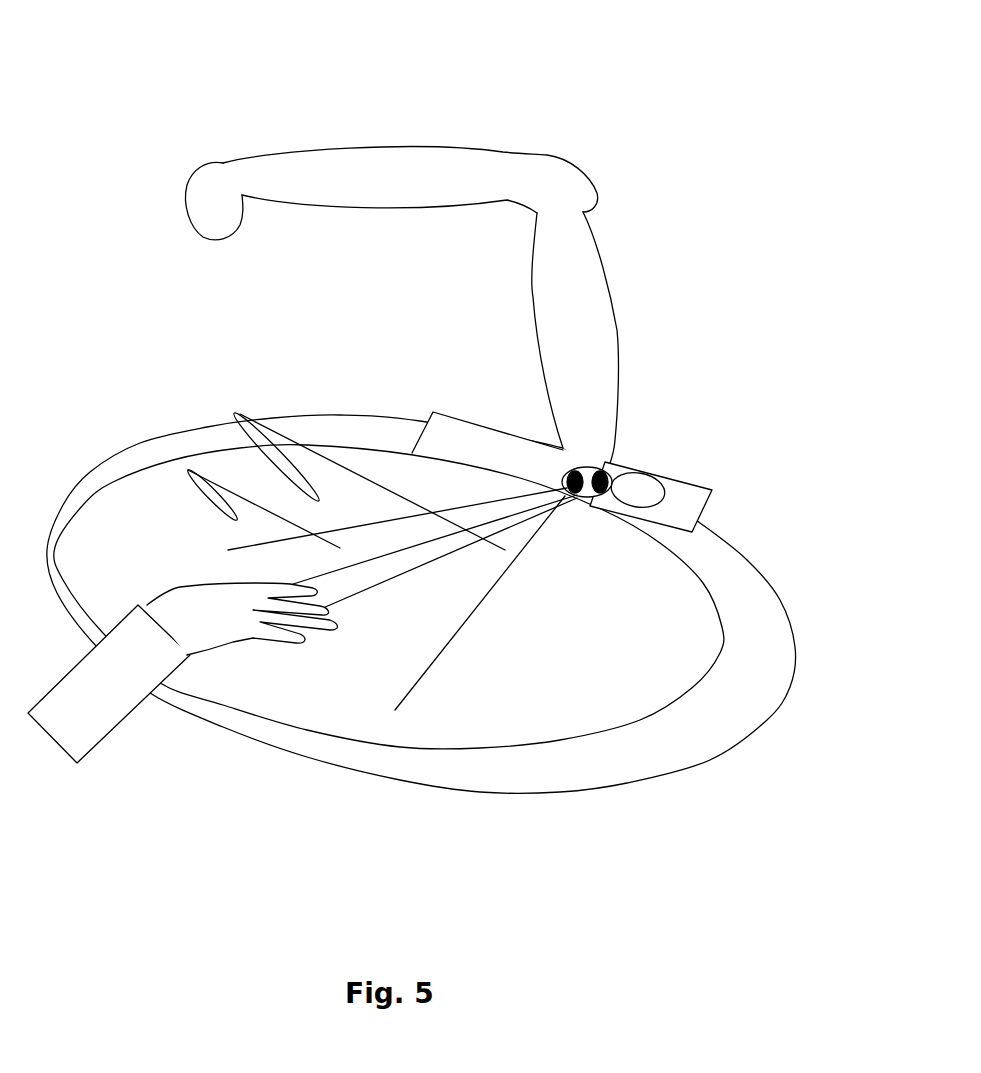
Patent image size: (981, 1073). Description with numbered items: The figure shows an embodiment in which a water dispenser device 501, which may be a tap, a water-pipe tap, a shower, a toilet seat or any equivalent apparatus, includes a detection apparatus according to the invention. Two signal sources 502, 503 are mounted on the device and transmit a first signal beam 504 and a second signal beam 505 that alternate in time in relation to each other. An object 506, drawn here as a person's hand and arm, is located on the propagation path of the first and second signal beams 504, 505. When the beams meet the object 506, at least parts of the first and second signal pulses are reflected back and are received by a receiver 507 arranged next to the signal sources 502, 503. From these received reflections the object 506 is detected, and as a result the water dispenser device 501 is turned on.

The water dispenser device 501 is at (460, 173).
The signal source 502 is at (499, 500).
The signal source 503 is at (659, 378).
The signal beam 504 is at (237, 520).
The signal beam 505 is at (320, 500).
The object 506 is at (183, 713).
The receiver 507 is at (693, 451).